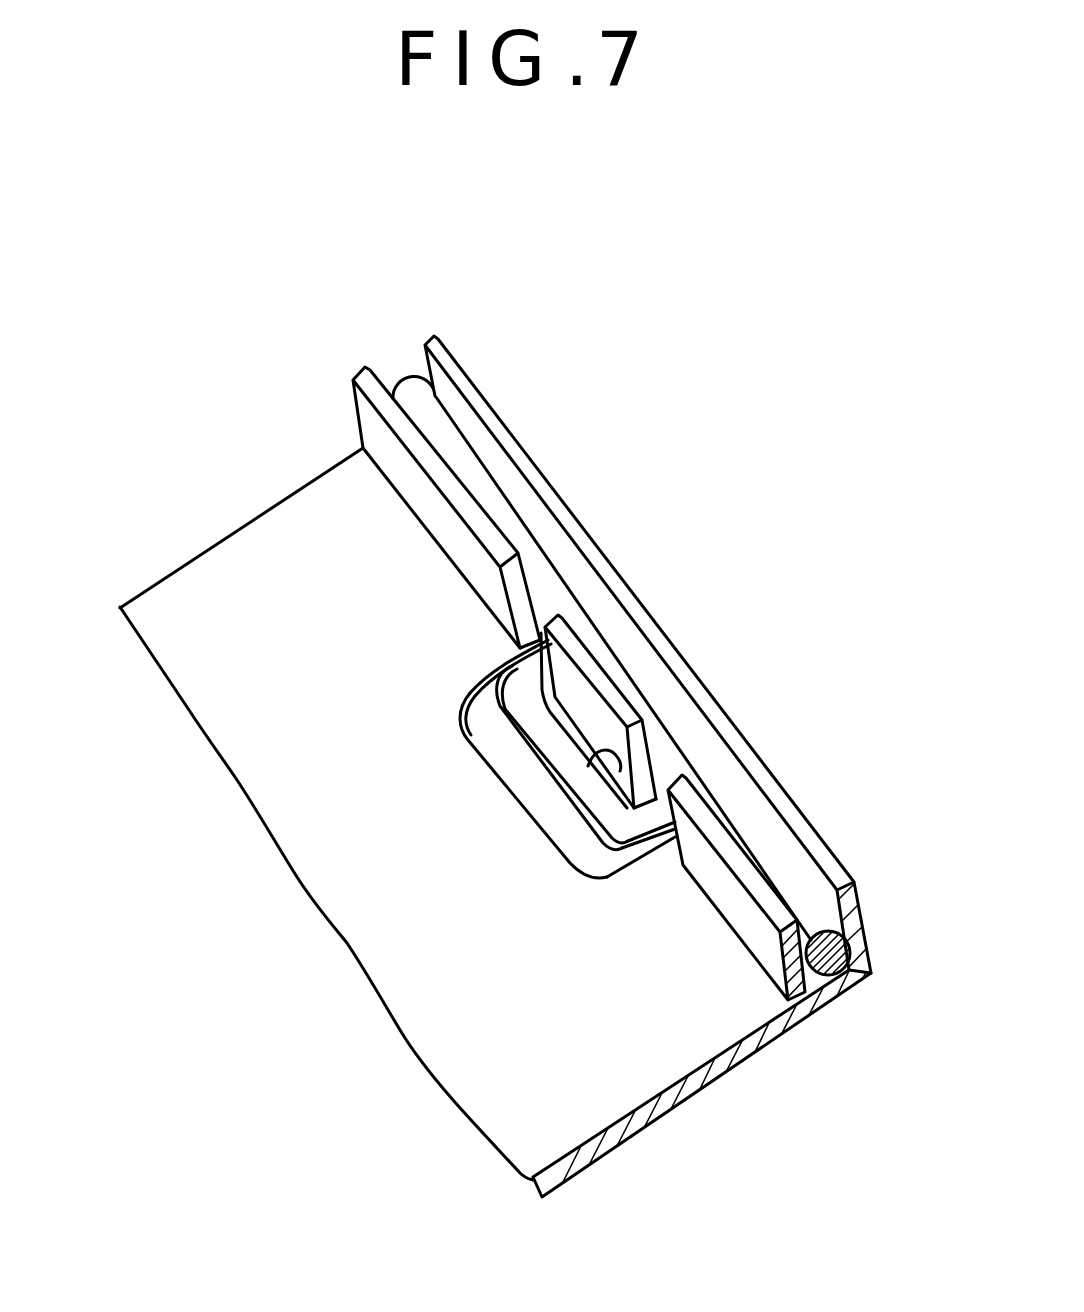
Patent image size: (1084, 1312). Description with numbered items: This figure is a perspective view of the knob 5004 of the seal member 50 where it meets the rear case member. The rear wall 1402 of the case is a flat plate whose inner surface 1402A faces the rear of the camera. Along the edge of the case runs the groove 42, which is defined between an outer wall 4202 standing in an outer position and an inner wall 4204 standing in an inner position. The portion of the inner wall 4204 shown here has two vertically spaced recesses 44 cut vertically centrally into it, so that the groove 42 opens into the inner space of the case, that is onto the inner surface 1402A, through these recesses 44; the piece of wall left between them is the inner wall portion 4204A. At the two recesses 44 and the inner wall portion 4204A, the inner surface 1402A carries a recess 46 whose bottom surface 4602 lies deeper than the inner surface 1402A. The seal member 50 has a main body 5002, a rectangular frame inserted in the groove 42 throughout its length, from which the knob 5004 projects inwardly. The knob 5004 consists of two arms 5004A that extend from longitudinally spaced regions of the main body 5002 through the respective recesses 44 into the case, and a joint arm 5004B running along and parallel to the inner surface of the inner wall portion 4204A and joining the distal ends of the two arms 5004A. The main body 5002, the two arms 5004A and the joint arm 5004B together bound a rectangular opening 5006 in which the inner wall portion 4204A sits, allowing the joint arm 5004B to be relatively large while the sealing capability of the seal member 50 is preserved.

The groove 42 is at (562, 604).
The outer wall 4202 is at (500, 417).
The inner wall 4204 is at (387, 443).
The inner wall portion 4204A is at (600, 682).
The recesses 44 is at (517, 583).
The recess 46 is at (395, 964).
The bottom surface 4602 is at (478, 800).
The seal member 50 is at (533, 744).
The main body 5002 is at (772, 866).
The knob 5004 is at (396, 842).
The arms 5004A is at (540, 668).
The joint arm 5004B is at (530, 793).
The rectangular opening 5006 is at (608, 756).
The rear wall 1402 is at (214, 545).
The inner surface 1402A is at (188, 628).